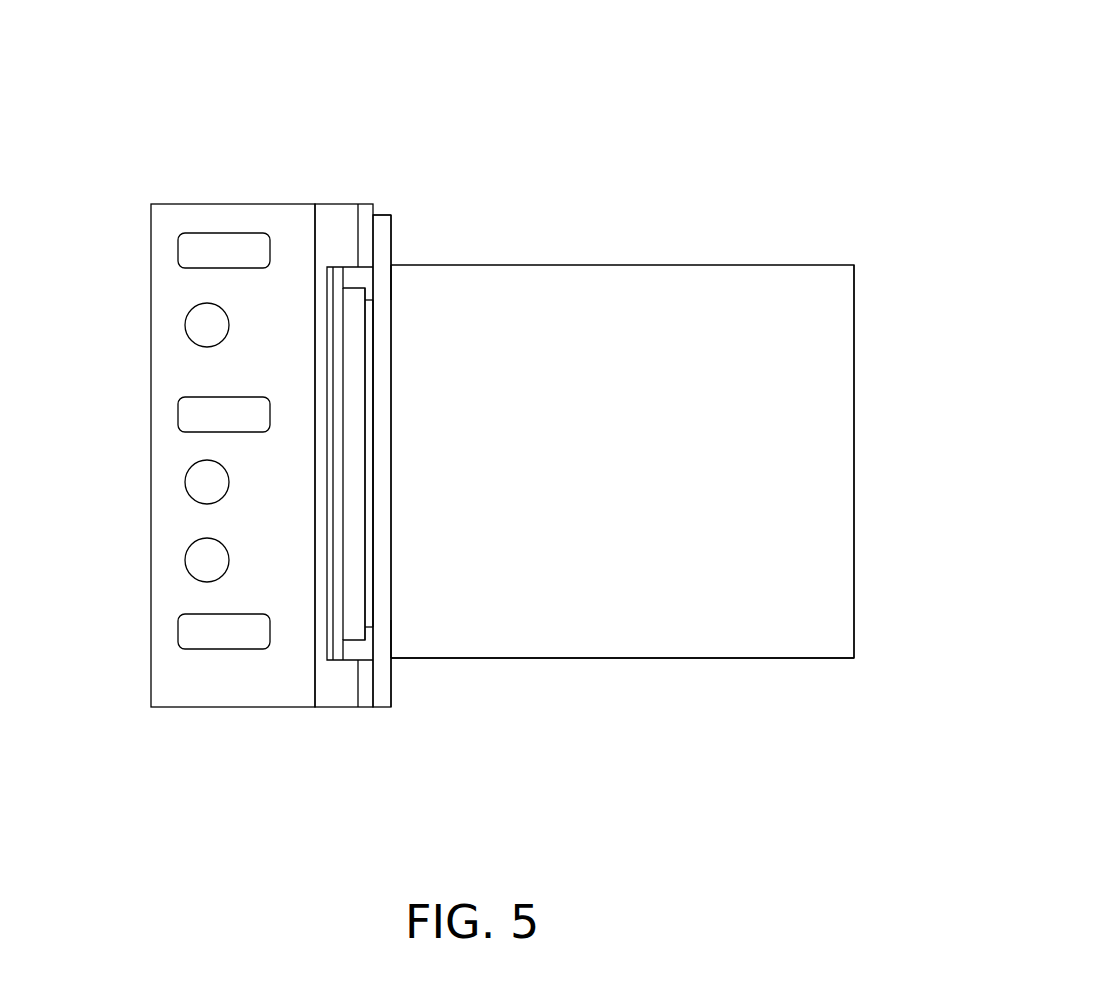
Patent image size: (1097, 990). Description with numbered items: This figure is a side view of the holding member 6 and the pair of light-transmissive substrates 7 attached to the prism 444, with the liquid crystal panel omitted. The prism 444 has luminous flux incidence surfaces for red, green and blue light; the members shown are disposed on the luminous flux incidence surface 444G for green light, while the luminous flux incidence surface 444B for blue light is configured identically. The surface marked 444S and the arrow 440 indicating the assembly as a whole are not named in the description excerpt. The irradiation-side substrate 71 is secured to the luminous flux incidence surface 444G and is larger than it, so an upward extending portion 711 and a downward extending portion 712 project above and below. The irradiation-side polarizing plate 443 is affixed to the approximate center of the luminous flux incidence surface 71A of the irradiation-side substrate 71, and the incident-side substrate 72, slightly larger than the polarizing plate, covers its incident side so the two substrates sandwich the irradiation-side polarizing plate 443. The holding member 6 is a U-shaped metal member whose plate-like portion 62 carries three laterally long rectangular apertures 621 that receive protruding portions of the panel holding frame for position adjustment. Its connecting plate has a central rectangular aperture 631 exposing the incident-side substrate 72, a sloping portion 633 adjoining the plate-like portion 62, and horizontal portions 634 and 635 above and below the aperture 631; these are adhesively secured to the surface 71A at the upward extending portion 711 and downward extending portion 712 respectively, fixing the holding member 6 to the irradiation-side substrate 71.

The holding member 6 is at (178, 212).
The plate-like portion 62 is at (190, 682).
The apertures 621 is at (178, 627).
The sloping portion 633 is at (325, 683).
The horizontal portion 634 is at (360, 210).
The horizontal portion 635 is at (365, 698).
The aperture 631 is at (335, 662).
The pair of light-transmissive substrates 7 is at (477, 493).
The irradiation-side substrate 71 is at (380, 517).
The luminous flux incidence surface 71A is at (362, 230).
The upward extending portion 711 is at (387, 227).
The downward extending portion 712 is at (385, 690).
The incident-side substrate 72 is at (357, 570).
The light source device 440 is at (767, 158).
The irradiation-side polarizing plate 443 is at (375, 412).
The prism 444 is at (647, 263).
The side face of housing 444S is at (854, 443).
The luminous flux incidence surface 444B is at (773, 647).
The luminous flux incidence surface 444G is at (390, 328).